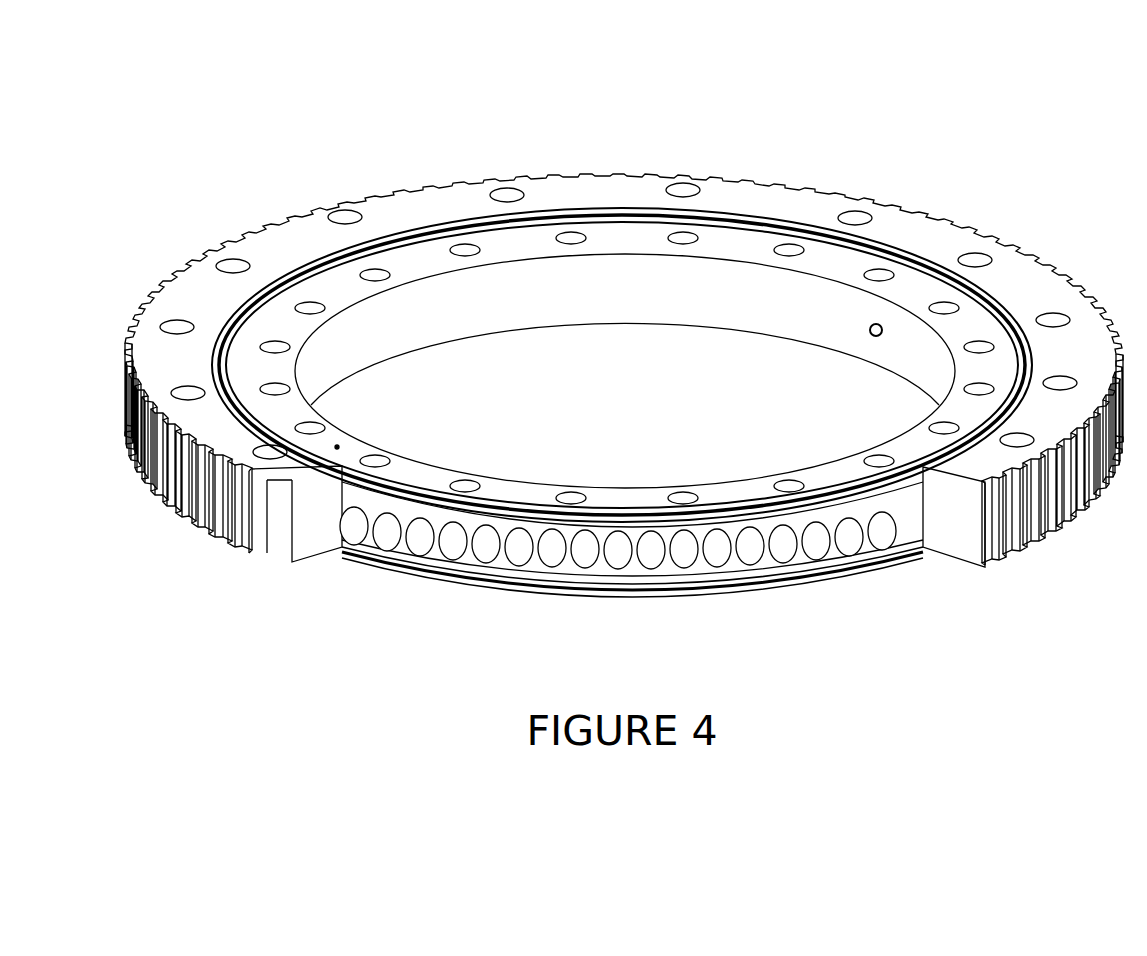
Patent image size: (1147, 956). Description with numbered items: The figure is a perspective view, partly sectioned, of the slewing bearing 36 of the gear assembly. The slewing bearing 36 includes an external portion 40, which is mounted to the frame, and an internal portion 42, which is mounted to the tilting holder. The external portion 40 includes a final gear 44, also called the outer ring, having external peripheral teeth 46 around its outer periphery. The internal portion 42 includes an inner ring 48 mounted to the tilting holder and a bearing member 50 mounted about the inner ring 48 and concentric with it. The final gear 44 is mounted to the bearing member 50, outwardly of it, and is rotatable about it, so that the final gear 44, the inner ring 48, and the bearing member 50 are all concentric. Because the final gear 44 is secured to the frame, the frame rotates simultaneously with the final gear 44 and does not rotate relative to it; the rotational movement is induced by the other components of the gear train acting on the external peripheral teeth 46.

The slewing bearing 36 is at (592, 360).
The external portion 40 is at (900, 230).
The internal portion 42 is at (525, 503).
The final gear 44 is at (957, 540).
The external peripheral teeth 46 is at (242, 502).
The inner ring 48 is at (530, 237).
The bearing member 50 is at (637, 540).